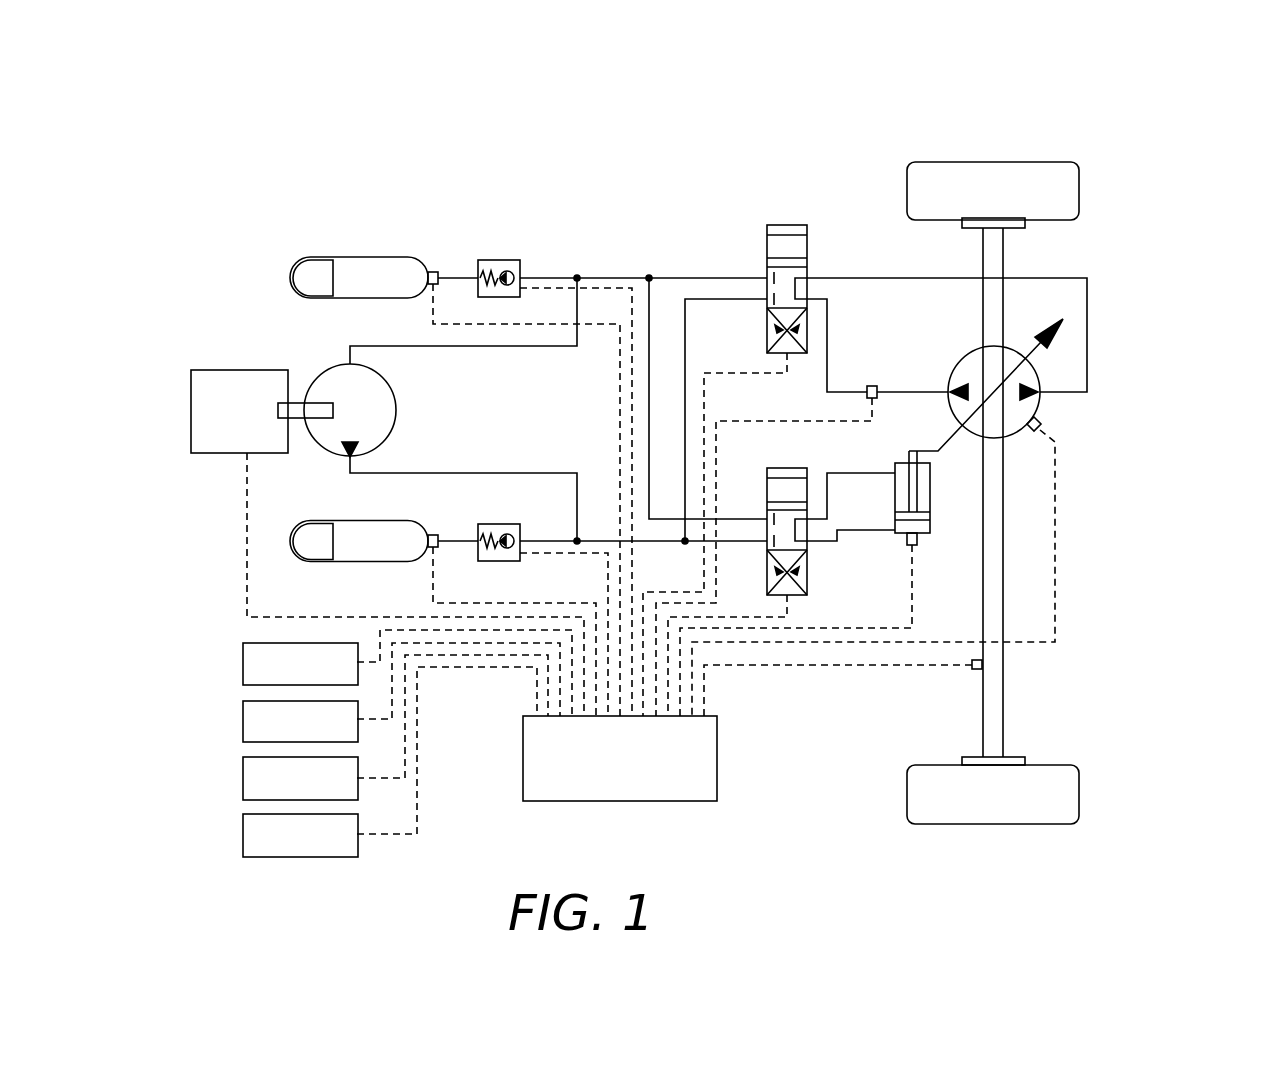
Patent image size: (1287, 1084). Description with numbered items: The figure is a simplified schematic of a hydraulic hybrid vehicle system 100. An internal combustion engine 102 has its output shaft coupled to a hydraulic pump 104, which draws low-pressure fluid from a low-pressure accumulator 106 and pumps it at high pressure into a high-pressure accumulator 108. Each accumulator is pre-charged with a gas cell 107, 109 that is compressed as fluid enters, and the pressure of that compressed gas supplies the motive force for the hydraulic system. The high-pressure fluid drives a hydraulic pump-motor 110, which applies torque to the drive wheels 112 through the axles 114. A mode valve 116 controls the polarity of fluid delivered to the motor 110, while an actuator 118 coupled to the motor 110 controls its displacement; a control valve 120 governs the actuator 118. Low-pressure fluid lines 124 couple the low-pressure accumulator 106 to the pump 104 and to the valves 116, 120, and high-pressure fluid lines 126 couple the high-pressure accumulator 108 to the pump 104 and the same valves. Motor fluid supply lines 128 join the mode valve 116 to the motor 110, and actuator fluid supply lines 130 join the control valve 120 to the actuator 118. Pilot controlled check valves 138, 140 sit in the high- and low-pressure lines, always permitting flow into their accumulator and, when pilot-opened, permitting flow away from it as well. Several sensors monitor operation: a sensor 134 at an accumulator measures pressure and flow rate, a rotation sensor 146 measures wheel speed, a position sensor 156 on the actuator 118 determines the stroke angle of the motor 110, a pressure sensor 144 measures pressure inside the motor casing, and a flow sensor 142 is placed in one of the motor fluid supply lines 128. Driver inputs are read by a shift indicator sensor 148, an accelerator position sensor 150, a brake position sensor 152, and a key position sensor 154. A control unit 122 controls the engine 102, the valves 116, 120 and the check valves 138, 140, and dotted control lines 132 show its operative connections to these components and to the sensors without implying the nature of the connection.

The hydraulic hybrid vehicle system 100 is at (1178, 132).
The internal combustion engine 102 is at (198, 377).
The hydraulic pump 104 is at (322, 386).
The low-pressure accumulator 106 is at (385, 270).
The gas cell 107 is at (305, 271).
The high-pressure accumulator 108 is at (370, 547).
The gas cell 109 is at (305, 531).
The hydraulic pump-motor 110 is at (967, 370).
The drive wheels 112 is at (972, 174).
The axles 114 is at (993, 692).
The mode valve 116 is at (790, 240).
The actuator 118 is at (912, 533).
The control valve 120 is at (800, 573).
The control unit 122 is at (708, 795).
The low-pressure fluid lines 124 is at (612, 278).
The high-pressure fluid lines 126 is at (476, 473).
The motor fluid supply lines 128 is at (848, 278).
The actuator fluid supply lines 130 is at (431, 272).
The control lines 132 is at (247, 535).
The sensor 134 is at (437, 535).
The pilot controlled check valve 138 is at (498, 524).
The pilot controlled check valve 140 is at (506, 275).
The flow sensor 142 is at (871, 386).
The pressure sensor 144 is at (1046, 428).
The rotation sensor 146 is at (972, 665).
The shift indicator sensor 148 is at (243, 663).
The accelerator position sensor 150 is at (243, 721).
The brake position sensor 152 is at (243, 779).
The key position sensor 154 is at (243, 835).
The position sensor 156 is at (917, 546).